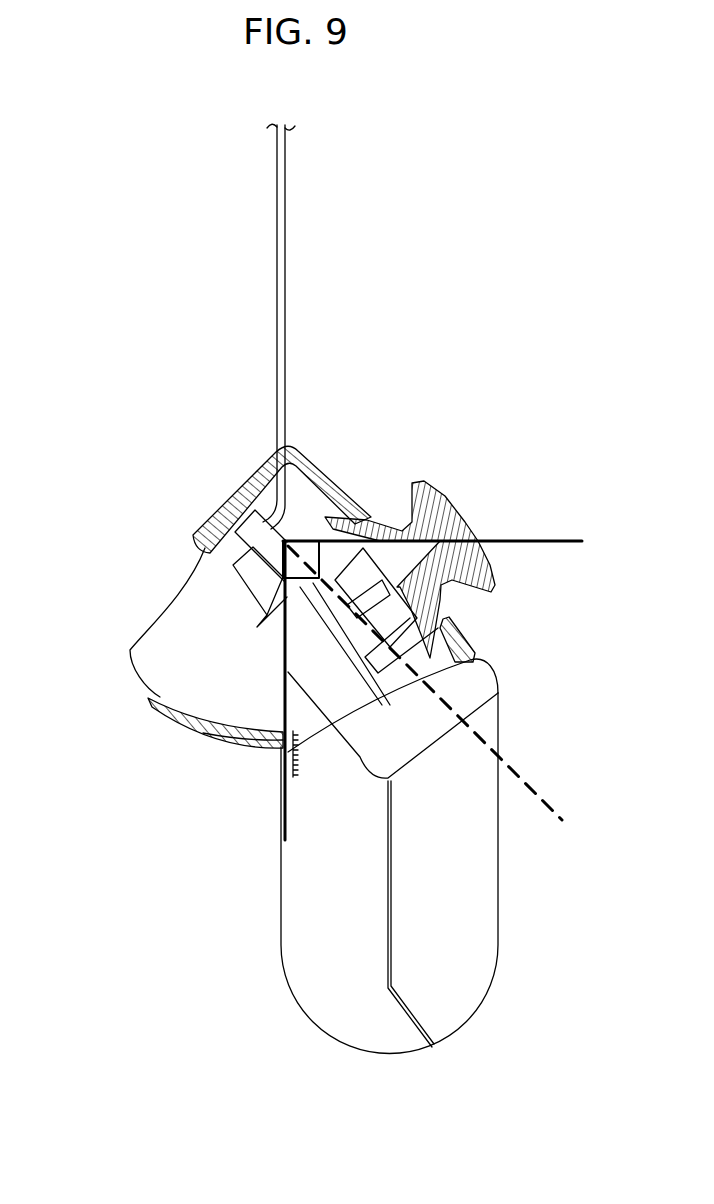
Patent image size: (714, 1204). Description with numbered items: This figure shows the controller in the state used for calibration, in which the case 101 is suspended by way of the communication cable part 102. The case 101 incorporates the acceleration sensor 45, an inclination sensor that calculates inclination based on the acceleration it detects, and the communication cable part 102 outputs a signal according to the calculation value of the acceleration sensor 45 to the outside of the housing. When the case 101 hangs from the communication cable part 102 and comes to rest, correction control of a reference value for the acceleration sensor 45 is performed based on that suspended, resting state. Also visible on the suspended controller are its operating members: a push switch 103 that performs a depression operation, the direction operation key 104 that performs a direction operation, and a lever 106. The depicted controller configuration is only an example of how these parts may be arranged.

The case 101 is at (313, 447).
The communication cable part 102 is at (284, 372).
The push switch 103 is at (458, 495).
The direction operation key 104 is at (282, 950).
The lever 106 is at (165, 595).
The acceleration sensor 45 is at (272, 501).